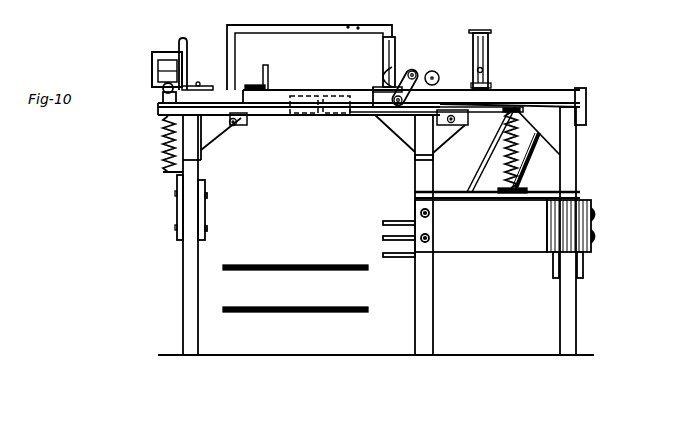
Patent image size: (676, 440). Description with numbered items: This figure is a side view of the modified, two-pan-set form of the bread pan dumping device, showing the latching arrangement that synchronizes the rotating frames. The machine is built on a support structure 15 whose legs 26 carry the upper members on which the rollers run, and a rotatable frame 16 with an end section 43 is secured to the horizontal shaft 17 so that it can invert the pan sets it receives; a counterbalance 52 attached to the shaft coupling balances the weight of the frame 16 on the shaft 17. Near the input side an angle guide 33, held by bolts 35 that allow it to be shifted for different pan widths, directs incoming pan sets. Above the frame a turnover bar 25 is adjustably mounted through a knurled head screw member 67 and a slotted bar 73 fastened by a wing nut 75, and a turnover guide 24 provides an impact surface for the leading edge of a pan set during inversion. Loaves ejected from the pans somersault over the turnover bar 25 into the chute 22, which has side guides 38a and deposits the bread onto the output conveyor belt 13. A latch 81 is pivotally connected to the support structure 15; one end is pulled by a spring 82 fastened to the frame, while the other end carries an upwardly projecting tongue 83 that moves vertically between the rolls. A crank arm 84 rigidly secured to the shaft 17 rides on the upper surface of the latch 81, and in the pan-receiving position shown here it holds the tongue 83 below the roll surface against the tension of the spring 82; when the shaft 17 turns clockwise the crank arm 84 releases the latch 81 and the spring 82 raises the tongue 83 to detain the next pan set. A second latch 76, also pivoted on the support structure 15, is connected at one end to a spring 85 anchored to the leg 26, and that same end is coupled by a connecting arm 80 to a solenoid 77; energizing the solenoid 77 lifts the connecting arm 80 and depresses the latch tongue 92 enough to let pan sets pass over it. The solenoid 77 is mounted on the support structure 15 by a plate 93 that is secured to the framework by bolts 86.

The output conveyor belt 13 is at (343, 263).
The support structure 15 is at (177, 202).
The frame 16 is at (275, 23).
The horizontal shaft 17 is at (416, 72).
The chute 22 is at (525, 162).
The turnover guide 24 is at (400, 57).
The turnover bar 25 is at (488, 66).
The legs 26 is at (183, 280).
The angle guide 33 is at (266, 65).
The bolts 35 is at (253, 84).
The side guides 38a is at (488, 172).
The end section 43 is at (310, 25).
The counterbalance 52 is at (439, 78).
The knurled head screw member 67 is at (489, 32).
The slotted bar 73 is at (507, 89).
The wing nut 75 is at (493, 87).
The latch 76 is at (252, 118).
The solenoid 77 is at (165, 52).
The connecting arm 80 is at (163, 100).
The latch 81 is at (363, 115).
The spring 82 is at (503, 132).
The tongue 83 is at (330, 96).
The crank arm 84 is at (408, 97).
The spring 85 is at (163, 133).
The bolts 86 is at (213, 86).
The latch tongue 92 is at (313, 96).
The plate 93 is at (187, 46).